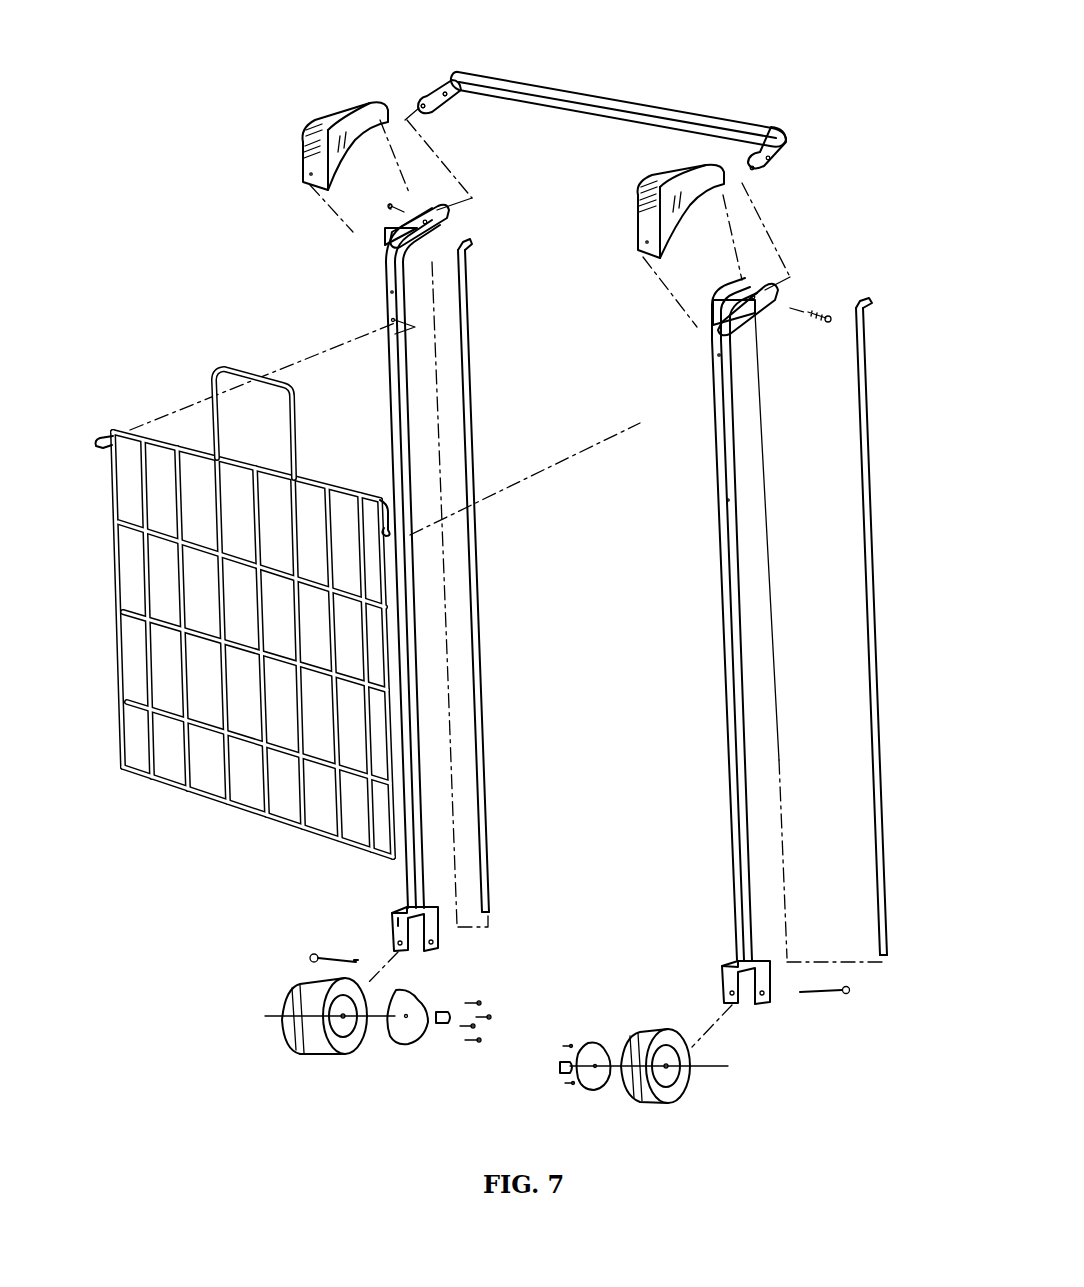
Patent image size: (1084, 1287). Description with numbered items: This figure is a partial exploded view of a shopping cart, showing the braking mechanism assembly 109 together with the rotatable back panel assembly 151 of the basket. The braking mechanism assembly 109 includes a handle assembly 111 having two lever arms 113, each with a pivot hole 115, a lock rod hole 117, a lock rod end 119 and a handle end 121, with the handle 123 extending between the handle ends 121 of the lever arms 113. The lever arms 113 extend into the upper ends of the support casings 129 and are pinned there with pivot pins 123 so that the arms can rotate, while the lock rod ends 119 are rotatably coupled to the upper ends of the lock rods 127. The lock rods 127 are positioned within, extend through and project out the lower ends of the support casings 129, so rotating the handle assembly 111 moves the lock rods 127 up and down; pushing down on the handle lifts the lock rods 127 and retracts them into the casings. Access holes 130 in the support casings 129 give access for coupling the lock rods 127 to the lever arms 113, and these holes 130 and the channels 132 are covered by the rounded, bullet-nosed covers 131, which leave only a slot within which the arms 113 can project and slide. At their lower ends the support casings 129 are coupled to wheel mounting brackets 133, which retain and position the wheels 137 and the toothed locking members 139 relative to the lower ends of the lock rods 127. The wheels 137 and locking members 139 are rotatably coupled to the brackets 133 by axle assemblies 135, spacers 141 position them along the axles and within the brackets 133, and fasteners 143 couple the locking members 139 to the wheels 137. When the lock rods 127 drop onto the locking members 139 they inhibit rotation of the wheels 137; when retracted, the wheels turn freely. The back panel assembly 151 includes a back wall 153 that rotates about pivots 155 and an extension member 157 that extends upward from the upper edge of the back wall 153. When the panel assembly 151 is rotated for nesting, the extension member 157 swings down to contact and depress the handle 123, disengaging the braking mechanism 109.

The braking mechanism assembly 109 is at (815, 118).
The handle assembly 111 is at (778, 123).
The lever arms 113 is at (452, 77).
The pivot hole 115 is at (459, 102).
The lock rod hole 117 is at (421, 101).
The lock rod end 119 is at (422, 112).
The handle end 121 is at (790, 137).
The handle 123 is at (608, 98).
The lock rods 127 is at (472, 426).
The support casings 129 is at (395, 428).
The access holes 130 is at (385, 240).
The covers 131 is at (308, 138).
The channels 132 is at (705, 236).
The wheel mounting brackets 133 is at (440, 946).
The axle assemblies 135 is at (333, 955).
The wheels 137 is at (303, 1000).
The locking members 139 is at (418, 998).
The spacers 141 is at (440, 1026).
The fasteners 143 is at (495, 1040).
The back panel assembly 151 is at (196, 372).
The back wall 153 is at (395, 647).
The pivots 155 is at (100, 440).
The extension member 157 is at (256, 372).